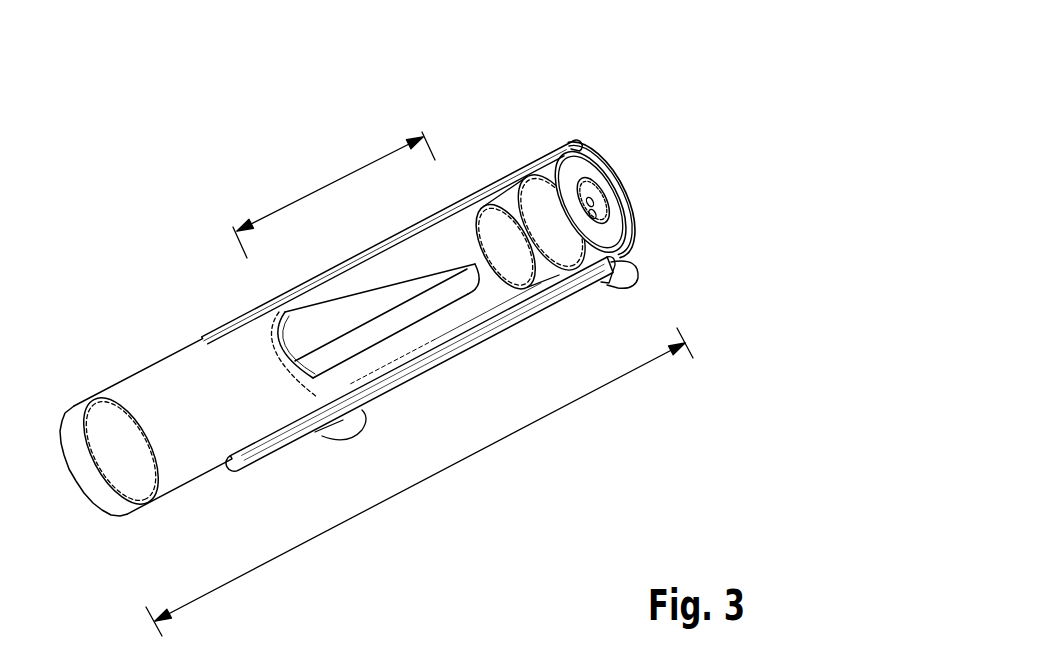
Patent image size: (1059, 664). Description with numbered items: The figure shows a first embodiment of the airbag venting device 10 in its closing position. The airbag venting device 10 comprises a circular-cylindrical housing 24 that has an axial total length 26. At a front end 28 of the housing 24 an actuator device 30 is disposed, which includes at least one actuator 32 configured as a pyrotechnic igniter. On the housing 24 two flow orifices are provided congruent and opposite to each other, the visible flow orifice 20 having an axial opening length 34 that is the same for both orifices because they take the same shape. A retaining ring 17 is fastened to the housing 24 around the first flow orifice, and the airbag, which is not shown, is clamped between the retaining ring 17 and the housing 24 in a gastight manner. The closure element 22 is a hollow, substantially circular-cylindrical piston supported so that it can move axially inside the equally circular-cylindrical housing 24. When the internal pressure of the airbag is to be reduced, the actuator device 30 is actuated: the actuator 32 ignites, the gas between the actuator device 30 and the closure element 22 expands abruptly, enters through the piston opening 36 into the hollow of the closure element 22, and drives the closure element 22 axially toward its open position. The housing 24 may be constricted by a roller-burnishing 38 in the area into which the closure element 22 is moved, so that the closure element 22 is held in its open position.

The airbag venting device 10 is at (146, 128).
The retaining ring 17 is at (572, 299).
The flow orifice 20 is at (457, 307).
The closure element 22 is at (377, 288).
The housing 24 is at (175, 362).
The axial total length 26 is at (527, 428).
The front end 28 is at (656, 198).
The actuator device 30 is at (571, 121).
The actuator 32 is at (585, 175).
The axial opening length 34 is at (310, 187).
The piston opening 36 is at (505, 243).
The roller-burnishing 38 is at (127, 413).